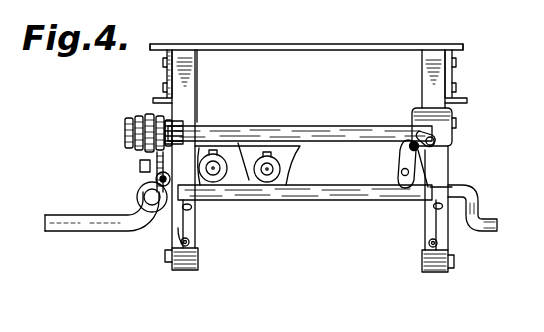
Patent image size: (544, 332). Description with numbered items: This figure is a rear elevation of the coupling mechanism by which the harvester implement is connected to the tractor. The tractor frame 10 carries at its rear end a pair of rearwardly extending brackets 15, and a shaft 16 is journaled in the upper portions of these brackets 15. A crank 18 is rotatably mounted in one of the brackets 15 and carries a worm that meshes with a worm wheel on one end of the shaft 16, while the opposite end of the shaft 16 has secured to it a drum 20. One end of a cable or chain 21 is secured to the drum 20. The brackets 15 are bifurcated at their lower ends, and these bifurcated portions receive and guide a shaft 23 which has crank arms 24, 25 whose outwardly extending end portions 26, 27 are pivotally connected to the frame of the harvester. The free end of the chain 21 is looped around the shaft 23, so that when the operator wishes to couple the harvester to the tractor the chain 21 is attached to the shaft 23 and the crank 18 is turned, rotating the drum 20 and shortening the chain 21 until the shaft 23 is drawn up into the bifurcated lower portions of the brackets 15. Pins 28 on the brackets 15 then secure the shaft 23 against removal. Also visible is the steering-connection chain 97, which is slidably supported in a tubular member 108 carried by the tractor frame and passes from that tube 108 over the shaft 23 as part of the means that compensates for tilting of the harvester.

The frame 10 is at (462, 56).
The brackets 15 is at (193, 230).
The shaft 16 is at (322, 126).
The crank 18 is at (416, 158).
The drum 20 is at (150, 114).
The cable or chain 21 is at (147, 162).
The shaft 23 is at (321, 200).
The crank arm 24 is at (479, 203).
The crank arm 25 is at (152, 228).
The end portion 26 is at (489, 232).
The end portion 27 is at (85, 217).
The pins 28 is at (192, 207).
The chain 97 is at (156, 180).
The tubular member 108 is at (147, 168).